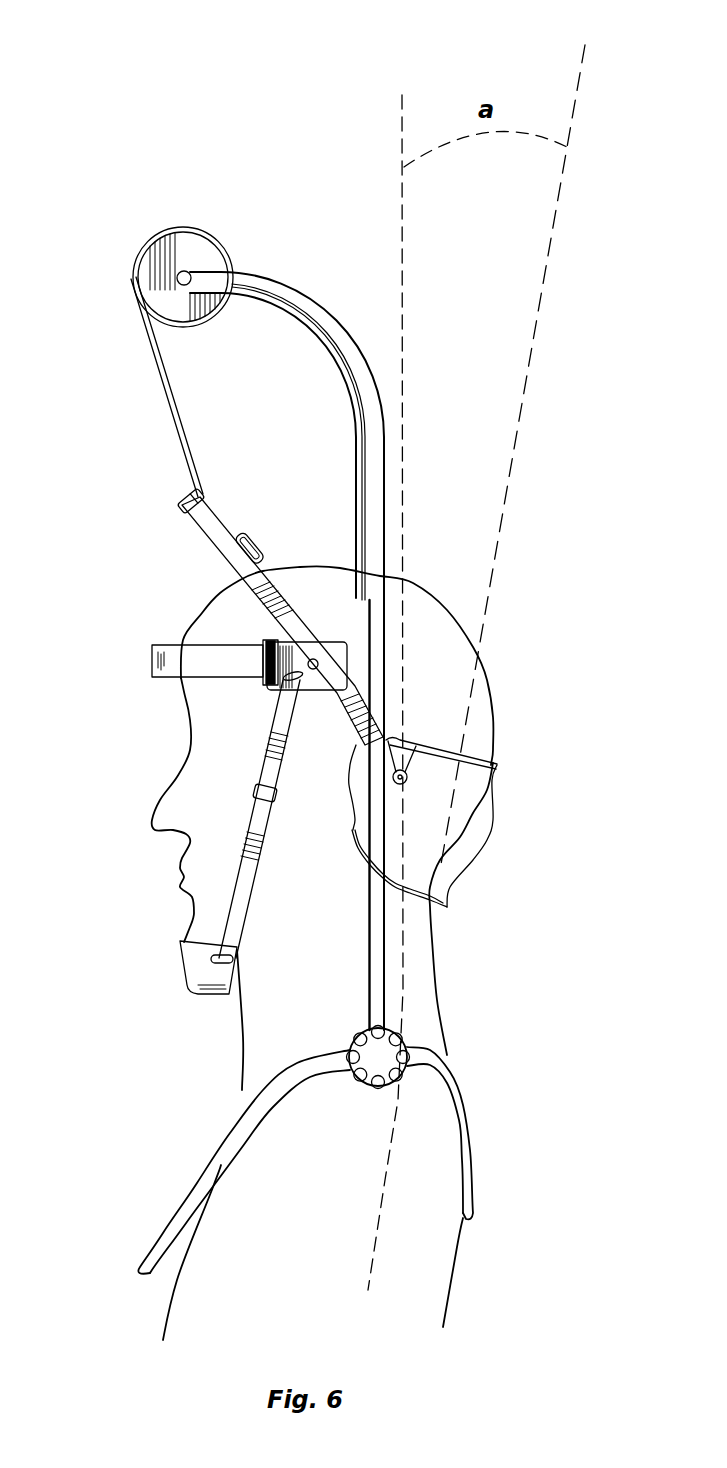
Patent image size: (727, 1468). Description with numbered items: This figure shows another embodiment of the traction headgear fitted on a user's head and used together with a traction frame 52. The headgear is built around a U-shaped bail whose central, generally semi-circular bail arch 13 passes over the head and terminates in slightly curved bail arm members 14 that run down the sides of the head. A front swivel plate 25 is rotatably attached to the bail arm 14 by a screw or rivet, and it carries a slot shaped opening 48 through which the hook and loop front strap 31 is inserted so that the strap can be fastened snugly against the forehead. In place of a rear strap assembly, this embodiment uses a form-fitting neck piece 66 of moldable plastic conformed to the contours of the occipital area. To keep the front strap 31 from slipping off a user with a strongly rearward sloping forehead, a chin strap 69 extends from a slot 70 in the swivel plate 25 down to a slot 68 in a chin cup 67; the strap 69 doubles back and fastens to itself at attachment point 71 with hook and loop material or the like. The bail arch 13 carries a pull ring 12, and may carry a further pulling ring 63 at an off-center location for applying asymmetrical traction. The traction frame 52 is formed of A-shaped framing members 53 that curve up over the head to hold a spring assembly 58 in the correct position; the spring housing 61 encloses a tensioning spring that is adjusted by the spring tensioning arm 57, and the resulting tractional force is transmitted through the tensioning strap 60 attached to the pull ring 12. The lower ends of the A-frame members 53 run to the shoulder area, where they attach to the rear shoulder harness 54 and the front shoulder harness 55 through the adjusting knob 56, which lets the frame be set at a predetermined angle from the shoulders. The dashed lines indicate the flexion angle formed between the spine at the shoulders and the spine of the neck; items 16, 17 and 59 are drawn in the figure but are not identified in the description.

The pull ring 12 is at (203, 500).
The bail arch 13 is at (210, 523).
The bail arm member 14 is at (352, 745).
The pivot screw 16 is at (296, 680).
The ear cup pivot 17 is at (397, 770).
The front swivel plate 25 is at (337, 652).
The front strap 31 is at (203, 657).
The slot shaped opening 48 is at (265, 650).
The traction frame 52 is at (373, 341).
The A-shaped framing member 53 is at (327, 312).
The rear shoulder harness 54 is at (472, 1120).
The front shoulder harness 55 is at (170, 1222).
The adjusting knob 56 is at (395, 1035).
The spring tensioning arm 57 is at (292, 312).
The spring assembly 58 is at (190, 226).
The pivot pin 59 is at (191, 271).
The tensioning strap 60 is at (160, 366).
The spring housing 61 is at (150, 266).
The pulling ring 63 is at (254, 545).
The form-fitting neck piece 66 is at (457, 803).
The chin cup 67 is at (223, 970).
The slot 68 is at (234, 959).
The chin strap 69 is at (246, 870).
The slot 70 is at (278, 752).
The attachment point 71 is at (271, 795).